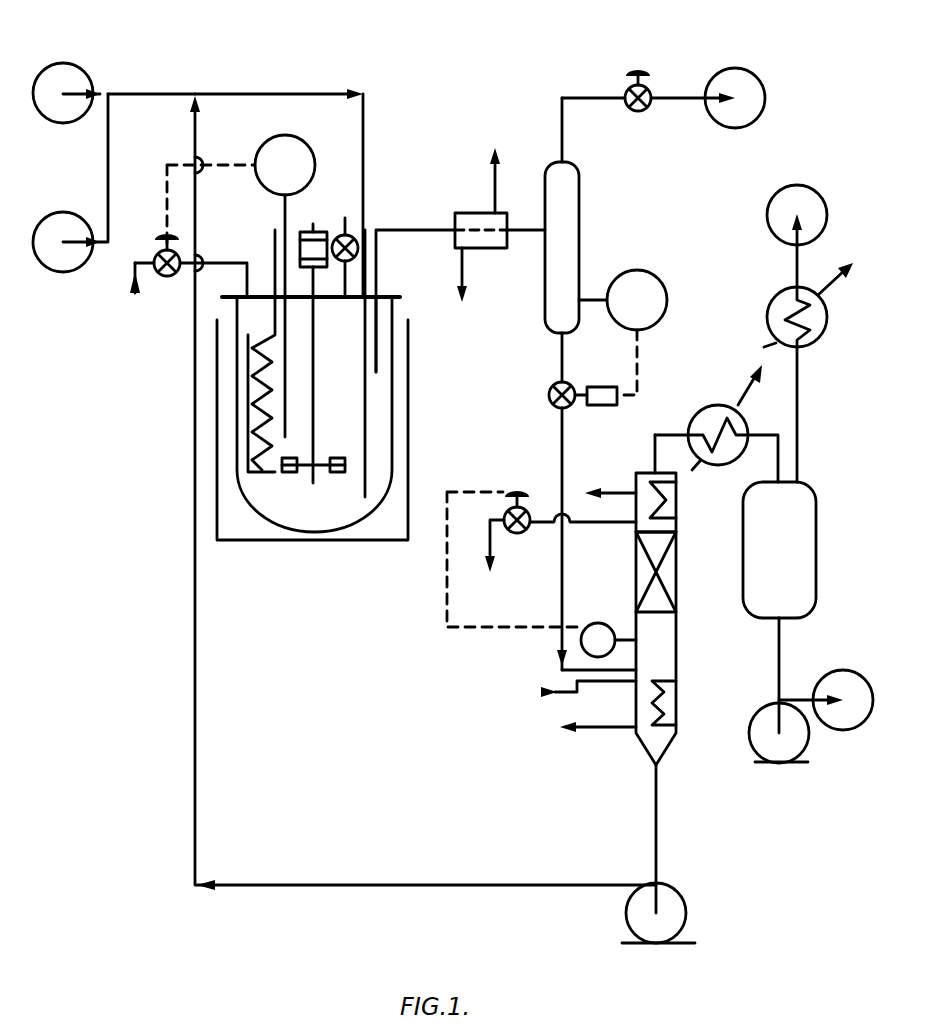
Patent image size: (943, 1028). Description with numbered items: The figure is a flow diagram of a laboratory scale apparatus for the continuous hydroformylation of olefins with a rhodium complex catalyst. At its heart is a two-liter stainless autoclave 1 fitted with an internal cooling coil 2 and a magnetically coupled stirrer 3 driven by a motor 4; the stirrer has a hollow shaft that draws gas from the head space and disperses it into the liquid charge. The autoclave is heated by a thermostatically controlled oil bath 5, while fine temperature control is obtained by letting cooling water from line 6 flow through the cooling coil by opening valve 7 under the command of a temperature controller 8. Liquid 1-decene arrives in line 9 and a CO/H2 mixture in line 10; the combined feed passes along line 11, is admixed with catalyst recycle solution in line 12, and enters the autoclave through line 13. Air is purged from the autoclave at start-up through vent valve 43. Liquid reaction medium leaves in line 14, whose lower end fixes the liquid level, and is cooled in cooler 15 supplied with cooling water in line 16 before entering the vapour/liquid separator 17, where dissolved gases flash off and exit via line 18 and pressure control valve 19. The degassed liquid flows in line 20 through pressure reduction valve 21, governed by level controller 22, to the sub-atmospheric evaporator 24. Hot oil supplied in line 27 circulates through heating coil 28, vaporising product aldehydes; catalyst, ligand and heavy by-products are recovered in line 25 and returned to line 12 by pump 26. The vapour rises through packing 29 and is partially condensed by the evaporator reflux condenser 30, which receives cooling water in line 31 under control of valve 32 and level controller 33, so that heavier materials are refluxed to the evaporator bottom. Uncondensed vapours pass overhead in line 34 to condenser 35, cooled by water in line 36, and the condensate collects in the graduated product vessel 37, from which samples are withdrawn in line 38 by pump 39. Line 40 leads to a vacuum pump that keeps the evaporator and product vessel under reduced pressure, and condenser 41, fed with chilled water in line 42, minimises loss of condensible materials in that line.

The autoclave 1 is at (392, 378).
The cooling coil 2 is at (262, 380).
The stirrer 3 is at (338, 473).
The motor 4 is at (310, 231).
The oil bath 5 is at (408, 425).
The line 6 is at (131, 287).
The valve 7 is at (155, 252).
The temperature controller 8 is at (306, 156).
The line 9 is at (108, 170).
The line 10 is at (97, 92).
The line 11 is at (138, 92).
The line 12 is at (195, 605).
The line 13 is at (266, 92).
The line 14 is at (433, 232).
The cooler 15 is at (470, 212).
The line 16 is at (466, 290).
The vapour/liquid separator 17 is at (580, 208).
The line 18 is at (590, 97).
The pressure control valve 19 is at (655, 86).
The line 20 is at (562, 356).
The pressure reduction valve 21 is at (549, 394).
The level controller 22 is at (658, 268).
The evaporator 24 is at (676, 637).
The line 25 is at (655, 822).
The pump 26 is at (627, 912).
The line 27 is at (603, 686).
The heating coil 28 is at (676, 697).
The packing 29 is at (668, 582).
The evaporator reflux condenser 30 is at (657, 508).
The line 31 is at (613, 527).
The valve 32 is at (516, 534).
The level controller 33 is at (606, 624).
The line 34 is at (655, 452).
The condenser 35 is at (718, 405).
The line 36 is at (696, 465).
The graduated product vessel 37 is at (816, 567).
The line 38 is at (782, 641).
The pump 39 is at (755, 740).
The line 40 is at (790, 262).
The condenser 41 is at (828, 318).
The line 42 is at (770, 345).
The vent valve 43 is at (343, 234).